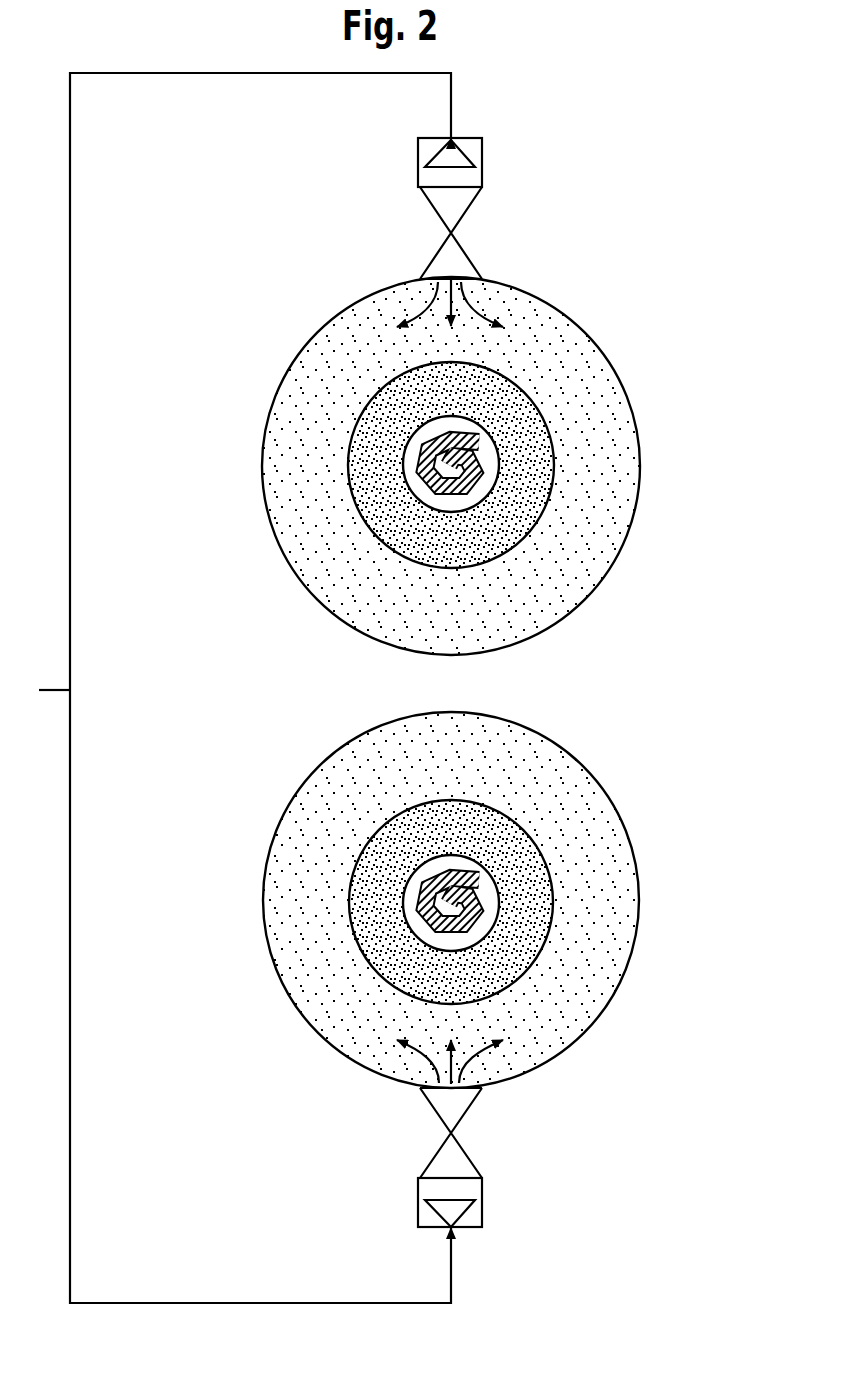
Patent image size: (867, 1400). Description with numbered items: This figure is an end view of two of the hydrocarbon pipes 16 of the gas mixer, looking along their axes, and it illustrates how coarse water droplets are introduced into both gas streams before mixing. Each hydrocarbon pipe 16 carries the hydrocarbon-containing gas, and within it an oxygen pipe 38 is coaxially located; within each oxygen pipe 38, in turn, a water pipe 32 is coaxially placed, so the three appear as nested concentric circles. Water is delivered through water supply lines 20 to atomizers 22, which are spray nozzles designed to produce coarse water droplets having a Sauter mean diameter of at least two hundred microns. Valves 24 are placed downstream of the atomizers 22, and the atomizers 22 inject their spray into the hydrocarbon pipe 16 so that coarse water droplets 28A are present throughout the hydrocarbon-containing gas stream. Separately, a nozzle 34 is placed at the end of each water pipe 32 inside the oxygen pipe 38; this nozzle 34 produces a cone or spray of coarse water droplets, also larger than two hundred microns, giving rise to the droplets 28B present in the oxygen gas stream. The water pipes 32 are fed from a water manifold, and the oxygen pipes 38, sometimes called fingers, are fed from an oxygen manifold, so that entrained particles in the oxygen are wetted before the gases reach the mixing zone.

The hydrocarbon pipe 16 is at (632, 400).
The water supply line 20 is at (70, 500).
The atomizer 22 is at (483, 160).
The valve 24 is at (468, 214).
The droplets 28A is at (605, 493).
The droplets 28B is at (513, 542).
The water pipe 32 is at (497, 482).
The nozzle 34 is at (413, 457).
The oxygen pipe 38 is at (510, 378).